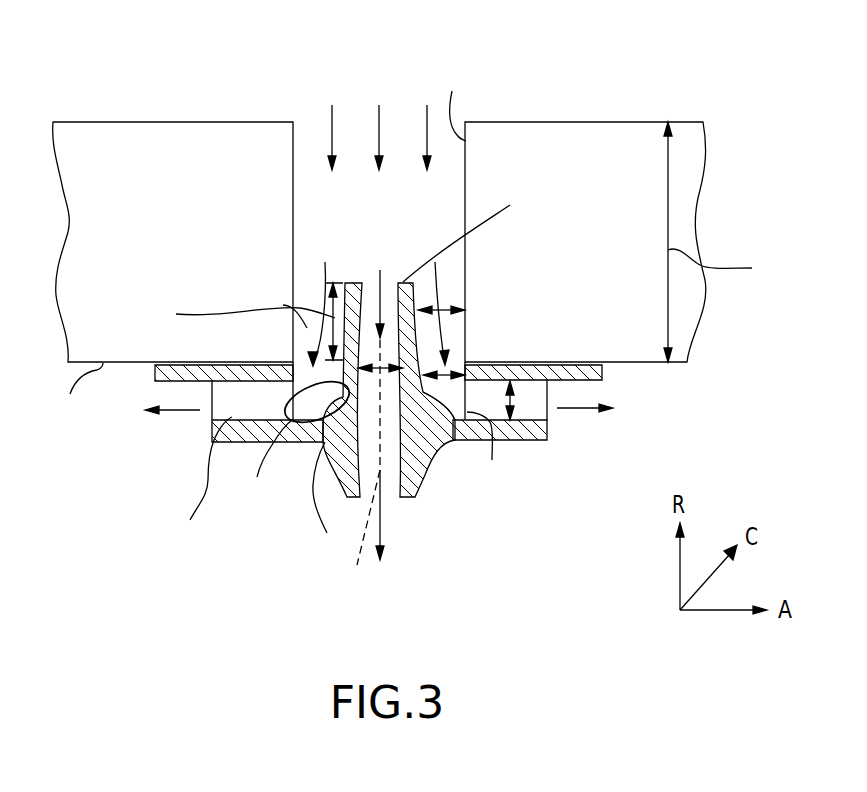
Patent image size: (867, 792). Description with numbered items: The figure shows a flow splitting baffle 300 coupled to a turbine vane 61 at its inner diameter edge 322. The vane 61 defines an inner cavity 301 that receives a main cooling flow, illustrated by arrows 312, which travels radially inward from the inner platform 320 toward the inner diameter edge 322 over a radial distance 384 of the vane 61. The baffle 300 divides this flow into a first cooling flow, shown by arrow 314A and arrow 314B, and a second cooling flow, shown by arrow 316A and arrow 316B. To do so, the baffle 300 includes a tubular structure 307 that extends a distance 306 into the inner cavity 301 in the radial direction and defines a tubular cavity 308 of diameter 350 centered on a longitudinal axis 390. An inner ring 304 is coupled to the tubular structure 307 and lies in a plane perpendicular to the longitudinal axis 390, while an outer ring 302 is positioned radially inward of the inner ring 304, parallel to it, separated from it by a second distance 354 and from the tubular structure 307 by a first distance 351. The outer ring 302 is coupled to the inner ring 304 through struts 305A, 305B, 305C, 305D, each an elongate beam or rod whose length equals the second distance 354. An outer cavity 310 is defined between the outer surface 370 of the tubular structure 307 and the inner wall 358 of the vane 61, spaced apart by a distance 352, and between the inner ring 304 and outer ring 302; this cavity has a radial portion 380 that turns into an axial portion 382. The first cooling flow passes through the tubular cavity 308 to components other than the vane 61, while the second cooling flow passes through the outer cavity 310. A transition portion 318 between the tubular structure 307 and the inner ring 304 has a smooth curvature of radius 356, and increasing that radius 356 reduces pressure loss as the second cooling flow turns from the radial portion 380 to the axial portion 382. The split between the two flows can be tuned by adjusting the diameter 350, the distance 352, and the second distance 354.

The flow splitting baffle 300 is at (455, 418).
The inner cavity 301 is at (453, 182).
The outer ring 302 is at (587, 363).
The inner ring 304 is at (238, 441).
The strut 305A is at (212, 421).
The strut 305B is at (264, 460).
The strut 305C is at (520, 420).
The strut 305D is at (490, 454).
The distance 306 is at (276, 309).
The tubular structure 307 is at (474, 235).
The tubular cavity 308 is at (388, 356).
The outer cavity 310 is at (307, 338).
The arrows 312 is at (427, 105).
The arrow 314A is at (380, 270).
The arrow 314B is at (382, 508).
The arrow 316A is at (325, 262).
The arrow 316B is at (173, 413).
The transition portion 318 is at (330, 502).
The inner platform 320 is at (168, 122).
The inner diameter edge 322 is at (75, 394).
The diameter 350 is at (362, 365).
The first distance 351 is at (448, 362).
The distance 352 is at (466, 305).
The second distance 354 is at (510, 400).
The radius 356 is at (295, 390).
The inner wall 358 is at (453, 104).
The outer surface 370 is at (430, 470).
The radial portion 380 is at (237, 317).
The axial portion 382 is at (192, 479).
The radial distance 384 is at (729, 265).
The longitudinal axis 390 is at (361, 469).
The vane 61 is at (637, 143).